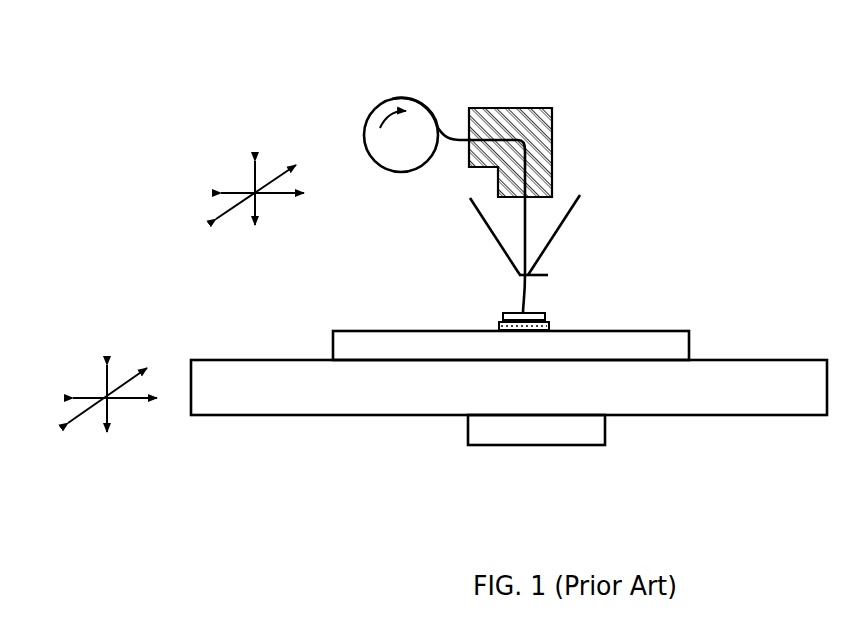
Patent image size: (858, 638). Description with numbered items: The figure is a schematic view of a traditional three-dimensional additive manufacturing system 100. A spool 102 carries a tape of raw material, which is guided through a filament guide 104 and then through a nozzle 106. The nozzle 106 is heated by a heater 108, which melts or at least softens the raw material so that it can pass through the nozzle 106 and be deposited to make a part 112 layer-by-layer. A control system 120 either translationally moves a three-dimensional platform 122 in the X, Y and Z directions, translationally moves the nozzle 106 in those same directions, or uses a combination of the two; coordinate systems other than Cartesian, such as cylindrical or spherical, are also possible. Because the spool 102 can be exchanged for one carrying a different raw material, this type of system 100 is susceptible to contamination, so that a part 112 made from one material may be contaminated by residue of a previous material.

The three-dimensional additive manufacturing system 100 is at (290, 51).
The spool 102 is at (391, 99).
The filament guide 104 is at (530, 108).
The nozzle 106 is at (573, 203).
The heater 108 is at (548, 275).
The part 112 is at (552, 315).
The control system 120 is at (598, 445).
The 3D platform 122 is at (752, 360).